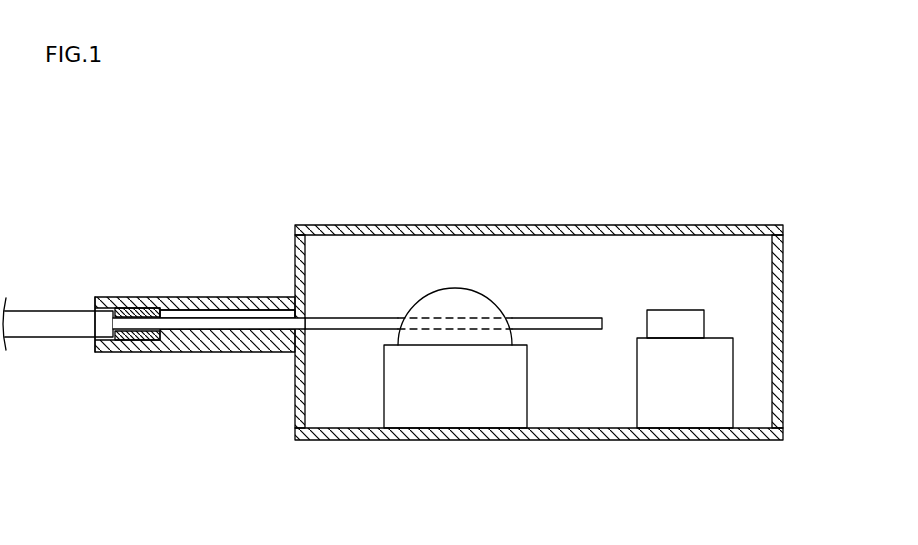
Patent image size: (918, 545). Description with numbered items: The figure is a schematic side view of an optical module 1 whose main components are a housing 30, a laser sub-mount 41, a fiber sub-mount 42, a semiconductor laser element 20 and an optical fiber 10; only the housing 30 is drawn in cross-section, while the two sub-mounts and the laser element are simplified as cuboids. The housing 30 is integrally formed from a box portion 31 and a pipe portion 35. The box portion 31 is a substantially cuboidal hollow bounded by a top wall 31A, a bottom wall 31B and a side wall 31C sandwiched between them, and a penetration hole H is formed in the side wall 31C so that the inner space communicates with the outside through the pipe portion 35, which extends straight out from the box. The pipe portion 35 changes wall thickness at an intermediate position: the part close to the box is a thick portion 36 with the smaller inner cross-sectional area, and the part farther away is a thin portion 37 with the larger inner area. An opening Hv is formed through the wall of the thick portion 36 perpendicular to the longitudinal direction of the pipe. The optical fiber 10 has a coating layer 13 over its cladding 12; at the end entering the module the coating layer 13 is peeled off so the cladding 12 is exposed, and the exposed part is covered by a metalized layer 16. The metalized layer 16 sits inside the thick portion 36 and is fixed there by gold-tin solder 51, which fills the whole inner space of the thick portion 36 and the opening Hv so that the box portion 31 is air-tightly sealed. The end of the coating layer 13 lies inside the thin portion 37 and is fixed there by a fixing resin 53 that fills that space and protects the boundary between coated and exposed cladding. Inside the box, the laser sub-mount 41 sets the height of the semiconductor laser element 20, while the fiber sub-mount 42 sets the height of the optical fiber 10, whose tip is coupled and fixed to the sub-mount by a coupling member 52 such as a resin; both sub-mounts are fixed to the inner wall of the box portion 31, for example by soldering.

The optical module 1 is at (733, 121).
The optical fiber 10 is at (77, 301).
The cladding 12 is at (358, 323).
The coating layer 13 is at (33, 318).
The metalized layer 16 is at (226, 322).
The semiconductor laser element 20 is at (685, 323).
The housing 30 is at (228, 414).
The box portion 31 is at (285, 405).
The top wall 31A is at (581, 228).
The bottom wall 31B is at (583, 440).
The side wall 31C is at (297, 268).
The pipe portion 35 is at (239, 386).
The thick portion 36 is at (293, 352).
The thin portion 37 is at (158, 352).
The laser sub-mount 41 is at (711, 393).
The fiber sub-mount 42 is at (431, 400).
The solder 51 is at (258, 311).
The coupling member 52 is at (459, 305).
The fixing resin 53 is at (146, 308).
The penetration hole H is at (314, 336).
The opening Hv is at (201, 295).